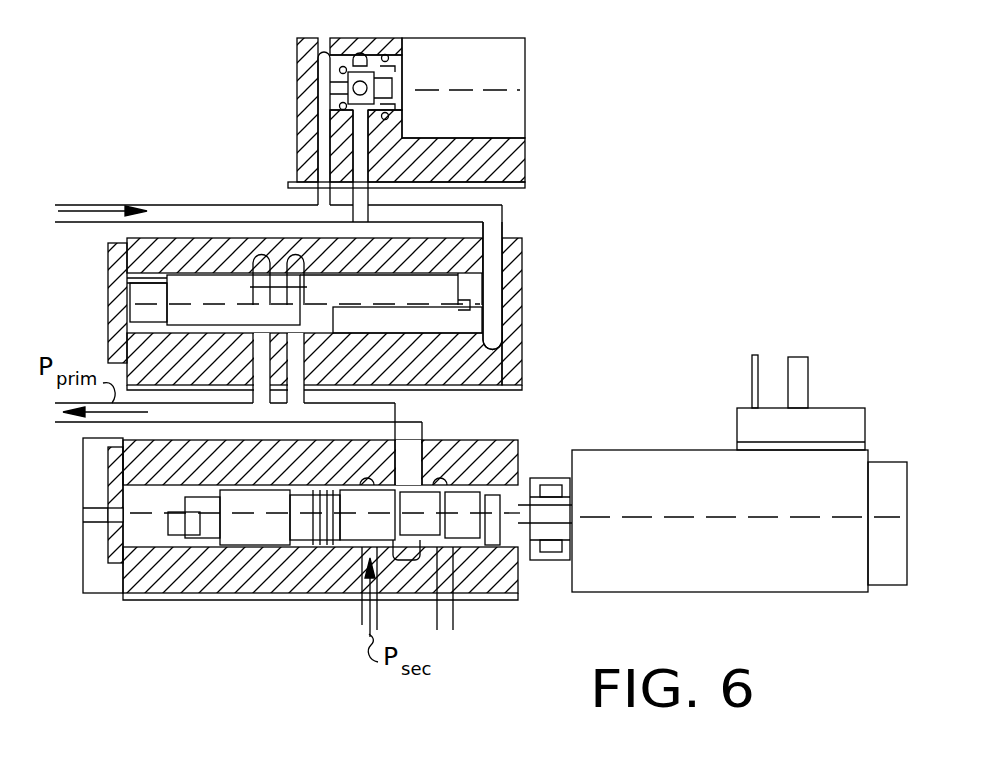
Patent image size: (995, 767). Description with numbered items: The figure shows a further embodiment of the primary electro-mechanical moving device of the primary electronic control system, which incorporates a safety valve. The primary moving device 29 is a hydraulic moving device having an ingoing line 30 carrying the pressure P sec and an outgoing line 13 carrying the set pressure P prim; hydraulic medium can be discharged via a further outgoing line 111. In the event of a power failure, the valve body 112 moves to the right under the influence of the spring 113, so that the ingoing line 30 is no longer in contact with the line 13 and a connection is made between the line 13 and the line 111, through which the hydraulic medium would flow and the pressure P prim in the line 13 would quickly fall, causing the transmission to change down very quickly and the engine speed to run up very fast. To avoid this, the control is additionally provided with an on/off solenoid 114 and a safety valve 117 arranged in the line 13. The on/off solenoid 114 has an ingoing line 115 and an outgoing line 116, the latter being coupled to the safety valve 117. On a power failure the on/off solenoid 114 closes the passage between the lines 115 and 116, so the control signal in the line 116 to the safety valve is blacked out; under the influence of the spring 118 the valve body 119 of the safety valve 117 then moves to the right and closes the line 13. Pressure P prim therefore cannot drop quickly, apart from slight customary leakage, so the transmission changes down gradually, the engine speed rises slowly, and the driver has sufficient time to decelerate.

The on/off solenoid 114 is at (300, 60).
The ingoing line 115 is at (198, 205).
The outgoing line 116 is at (492, 232).
The safety valve 117 is at (512, 352).
The spring 118 is at (112, 275).
The valve body 119 is at (192, 285).
The outgoing line 13 is at (100, 422).
The spring 113 is at (108, 524).
The valve body 112 is at (253, 523).
The ingoing line 30 is at (362, 613).
The outgoing line 111 is at (450, 615).
The primary moving device 29 is at (656, 434).